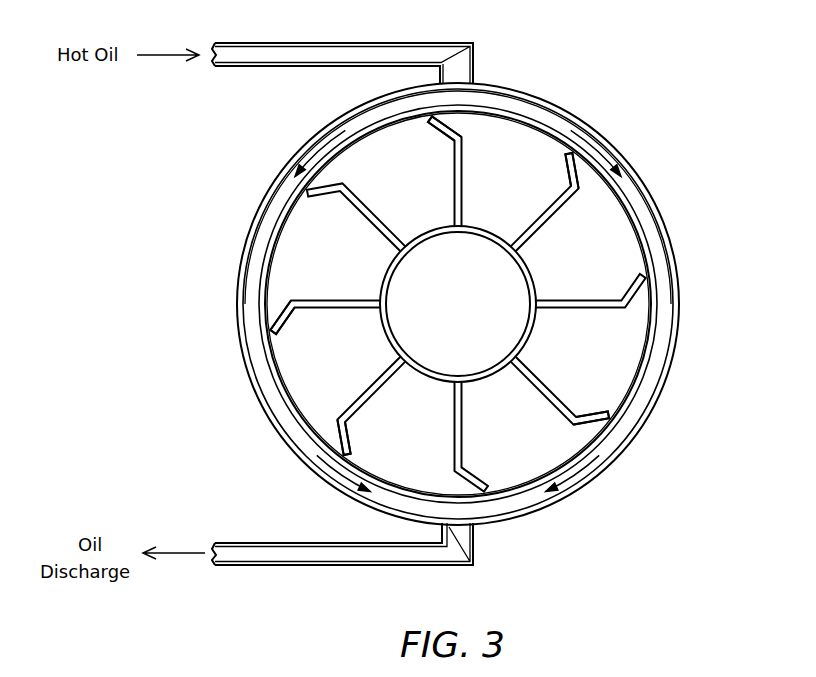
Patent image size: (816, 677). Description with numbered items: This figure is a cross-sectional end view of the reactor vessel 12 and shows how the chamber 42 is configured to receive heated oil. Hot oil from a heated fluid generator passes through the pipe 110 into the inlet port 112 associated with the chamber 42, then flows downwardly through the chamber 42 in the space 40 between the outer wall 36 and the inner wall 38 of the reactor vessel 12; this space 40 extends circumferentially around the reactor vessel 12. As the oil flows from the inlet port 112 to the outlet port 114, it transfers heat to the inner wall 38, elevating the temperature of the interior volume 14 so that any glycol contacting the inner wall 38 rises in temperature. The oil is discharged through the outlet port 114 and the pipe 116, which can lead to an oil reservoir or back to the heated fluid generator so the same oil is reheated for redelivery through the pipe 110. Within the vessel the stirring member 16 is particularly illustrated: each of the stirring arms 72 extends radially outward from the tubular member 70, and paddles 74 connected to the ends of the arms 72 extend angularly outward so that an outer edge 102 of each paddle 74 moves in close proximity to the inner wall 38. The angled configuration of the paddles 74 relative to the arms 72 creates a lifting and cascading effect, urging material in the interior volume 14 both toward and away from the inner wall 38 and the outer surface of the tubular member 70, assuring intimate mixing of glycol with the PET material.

The reactor vessel 12 is at (657, 192).
The interior volume 14 is at (532, 478).
The stirring member 16 is at (538, 291).
The outer wall 36 is at (676, 248).
The inner wall 38 is at (636, 382).
The space 40 is at (676, 342).
The chamber 42 is at (520, 102).
The tubular member 70 is at (532, 345).
The stirring arms 72 is at (464, 172).
The paddles 74 is at (432, 124).
The outer edge 102 is at (278, 332).
The pipe 110 is at (326, 43).
The inlet port 112 is at (474, 72).
The outlet port 114 is at (477, 536).
The pipe 116 is at (298, 567).